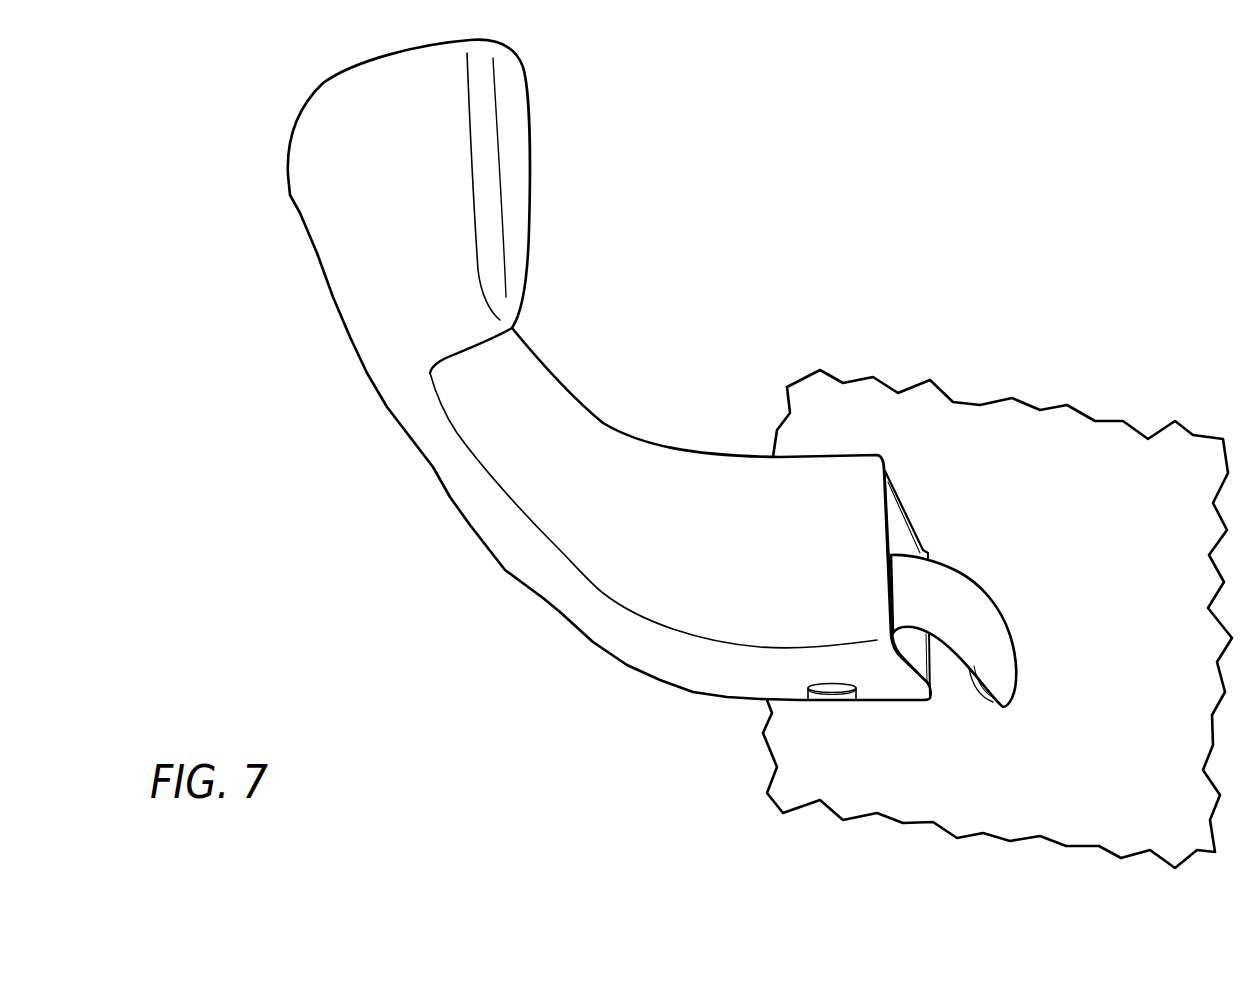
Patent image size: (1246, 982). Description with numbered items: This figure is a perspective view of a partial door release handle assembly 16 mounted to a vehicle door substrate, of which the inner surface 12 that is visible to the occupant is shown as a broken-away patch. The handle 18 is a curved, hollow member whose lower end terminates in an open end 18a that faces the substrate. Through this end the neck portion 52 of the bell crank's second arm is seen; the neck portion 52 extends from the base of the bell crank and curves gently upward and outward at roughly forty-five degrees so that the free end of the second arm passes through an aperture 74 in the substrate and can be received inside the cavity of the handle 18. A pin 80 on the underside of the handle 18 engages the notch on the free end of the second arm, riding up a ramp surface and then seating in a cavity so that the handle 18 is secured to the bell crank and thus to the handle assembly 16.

The inner surface 12 is at (1131, 668).
The door release handle assembly 16 is at (624, 449).
The handle 18 is at (624, 449).
The handle end opening 18a is at (890, 467).
The neck portion 52 is at (949, 716).
The aperture 74 is at (990, 705).
The pin 80 is at (830, 702).